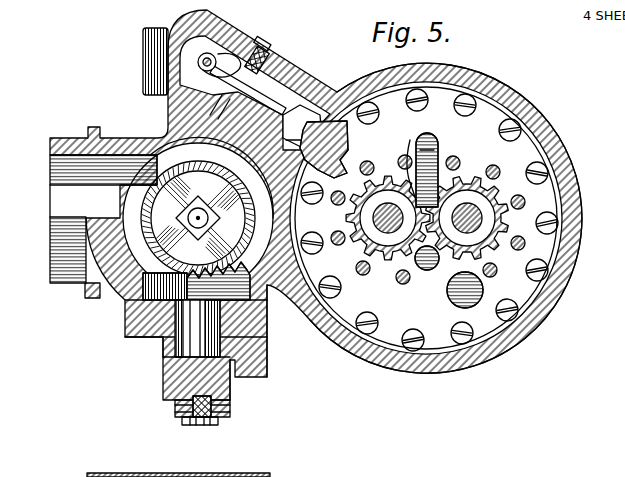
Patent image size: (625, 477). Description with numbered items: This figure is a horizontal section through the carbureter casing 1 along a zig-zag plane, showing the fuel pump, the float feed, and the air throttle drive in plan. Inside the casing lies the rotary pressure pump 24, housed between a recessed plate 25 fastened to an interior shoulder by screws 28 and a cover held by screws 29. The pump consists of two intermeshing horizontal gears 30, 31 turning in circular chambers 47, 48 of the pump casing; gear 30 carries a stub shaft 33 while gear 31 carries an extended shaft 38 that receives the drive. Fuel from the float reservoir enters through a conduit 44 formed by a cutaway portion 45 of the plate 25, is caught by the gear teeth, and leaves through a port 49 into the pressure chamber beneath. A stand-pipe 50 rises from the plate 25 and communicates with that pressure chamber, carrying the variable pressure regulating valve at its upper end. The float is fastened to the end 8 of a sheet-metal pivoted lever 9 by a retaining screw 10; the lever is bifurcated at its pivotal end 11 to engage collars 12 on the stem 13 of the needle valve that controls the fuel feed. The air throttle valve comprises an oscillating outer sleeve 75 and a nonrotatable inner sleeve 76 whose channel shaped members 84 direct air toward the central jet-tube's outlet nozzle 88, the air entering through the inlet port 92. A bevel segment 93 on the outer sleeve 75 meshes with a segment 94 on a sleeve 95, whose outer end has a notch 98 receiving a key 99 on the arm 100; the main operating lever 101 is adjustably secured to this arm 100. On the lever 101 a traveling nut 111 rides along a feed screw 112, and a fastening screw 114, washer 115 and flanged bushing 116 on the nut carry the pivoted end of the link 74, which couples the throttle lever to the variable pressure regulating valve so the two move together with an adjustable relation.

The casing 1 is at (319, 92).
The end of pivoted lever 8 is at (312, 125).
The pivoted lever 9 is at (248, 92).
The retaining screw 10 is at (302, 144).
The pivotal end 11 is at (259, 46).
The collars 12 is at (204, 58).
The stem 13 is at (226, 56).
The pressure pump 24 is at (414, 158).
The recessed plate 25 is at (494, 332).
The screws 28 is at (531, 296).
The screws 29 is at (494, 249).
The gear 30 is at (352, 223).
The gear 31 is at (496, 232).
The stub shaft 33 is at (388, 218).
The extended shaft 38 is at (467, 218).
The conduit 44 is at (438, 141).
The cutaway portion 45 is at (439, 151).
The circular chamber 47 is at (378, 177).
The circular chamber 48 is at (487, 186).
The port 49 is at (425, 272).
The stand-pipe 50 is at (450, 299).
The link 74 is at (232, 412).
The outer sleeve 75 is at (158, 182).
The inner sleeve 76 is at (171, 178).
The channel shaped members 84 is at (227, 171).
The outlet nozzle 88 is at (196, 281).
The inlet port 92 is at (66, 207).
The bevel segment 93 is at (268, 287).
The segment 94 is at (266, 314).
The sleeve 95 is at (180, 336).
The notch 98 is at (204, 346).
The key 99 is at (266, 347).
The arm 100 is at (174, 363).
The main operating lever 101 is at (232, 383).
The traveling nut 111 is at (231, 401).
The feed screw 112 is at (175, 393).
The fastening screw 114 is at (194, 425).
The washer 115 is at (221, 419).
The flanged bushing 116 is at (176, 408).